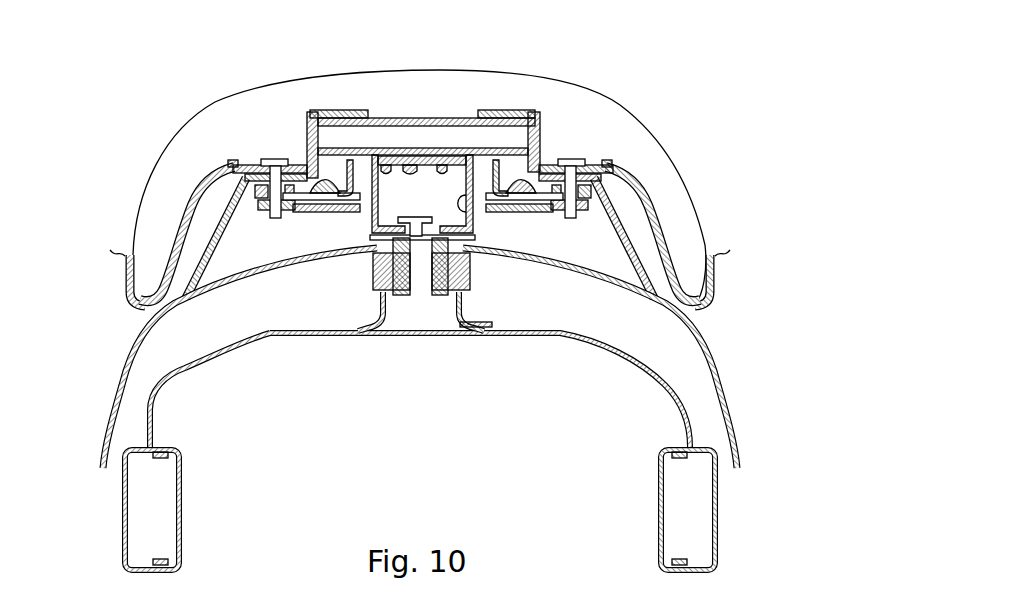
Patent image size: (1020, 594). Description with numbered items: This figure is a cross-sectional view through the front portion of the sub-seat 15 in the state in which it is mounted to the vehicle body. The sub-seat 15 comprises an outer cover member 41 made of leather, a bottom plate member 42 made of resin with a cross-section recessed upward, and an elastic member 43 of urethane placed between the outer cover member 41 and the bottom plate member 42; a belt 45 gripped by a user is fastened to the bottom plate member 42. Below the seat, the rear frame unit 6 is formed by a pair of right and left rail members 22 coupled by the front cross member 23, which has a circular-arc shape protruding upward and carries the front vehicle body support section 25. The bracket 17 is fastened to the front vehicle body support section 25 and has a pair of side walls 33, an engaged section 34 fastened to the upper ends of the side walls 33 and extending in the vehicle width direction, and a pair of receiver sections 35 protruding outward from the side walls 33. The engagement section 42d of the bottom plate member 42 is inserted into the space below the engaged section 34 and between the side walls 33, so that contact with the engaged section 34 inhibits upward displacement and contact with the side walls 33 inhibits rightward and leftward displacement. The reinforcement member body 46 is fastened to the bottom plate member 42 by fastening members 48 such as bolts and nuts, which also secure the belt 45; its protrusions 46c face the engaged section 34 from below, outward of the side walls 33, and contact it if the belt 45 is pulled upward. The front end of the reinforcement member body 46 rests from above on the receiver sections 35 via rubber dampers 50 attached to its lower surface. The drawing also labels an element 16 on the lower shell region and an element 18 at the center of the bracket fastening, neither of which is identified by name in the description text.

The sub-seat 15 is at (607, 93).
The outer cover member 41 is at (648, 133).
The elastic member 43 is at (677, 187).
The bottom plate member 42 is at (663, 227).
The belt 45 is at (717, 277).
The inner shell 16 is at (262, 336).
The front cross member 23 is at (203, 372).
The rear frame unit 6 is at (641, 376).
The rail members 22 is at (182, 510).
The engaged section 34 is at (437, 120).
The bracket 17 is at (461, 119).
The engagement section 42d is at (392, 157).
The side walls 33 is at (458, 200).
The shaft 18 is at (422, 286).
The front vehicle body support section 25 is at (466, 300).
The reinforcement member body 46 is at (297, 162).
The fastening members 48 is at (270, 158).
The rubber dampers 50 is at (328, 180).
The receiver sections 35 is at (322, 214).
The protrusions 46c is at (500, 160).